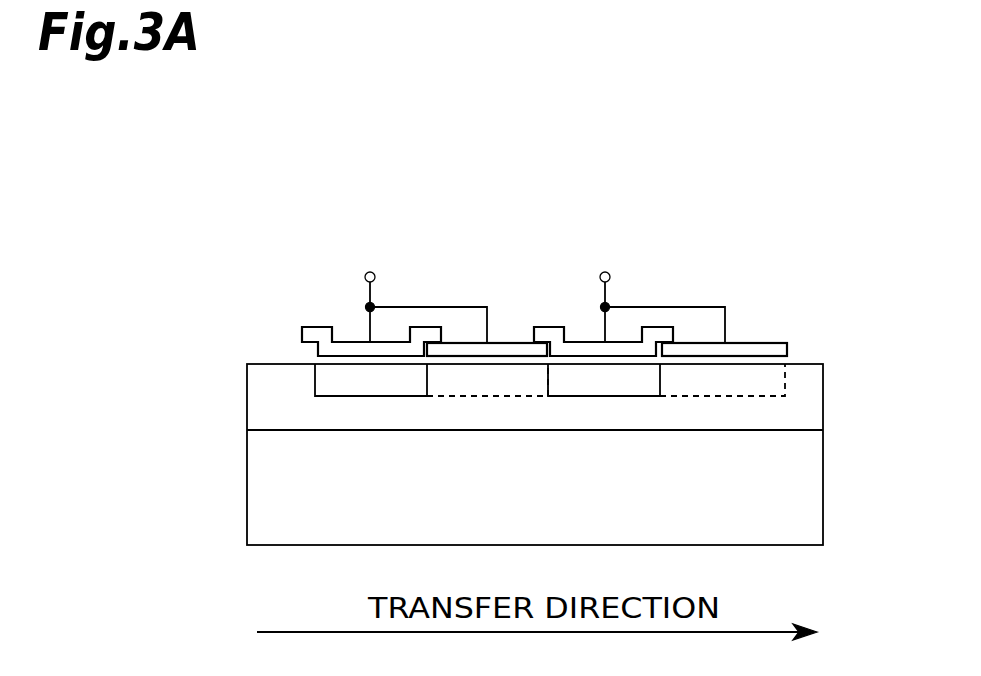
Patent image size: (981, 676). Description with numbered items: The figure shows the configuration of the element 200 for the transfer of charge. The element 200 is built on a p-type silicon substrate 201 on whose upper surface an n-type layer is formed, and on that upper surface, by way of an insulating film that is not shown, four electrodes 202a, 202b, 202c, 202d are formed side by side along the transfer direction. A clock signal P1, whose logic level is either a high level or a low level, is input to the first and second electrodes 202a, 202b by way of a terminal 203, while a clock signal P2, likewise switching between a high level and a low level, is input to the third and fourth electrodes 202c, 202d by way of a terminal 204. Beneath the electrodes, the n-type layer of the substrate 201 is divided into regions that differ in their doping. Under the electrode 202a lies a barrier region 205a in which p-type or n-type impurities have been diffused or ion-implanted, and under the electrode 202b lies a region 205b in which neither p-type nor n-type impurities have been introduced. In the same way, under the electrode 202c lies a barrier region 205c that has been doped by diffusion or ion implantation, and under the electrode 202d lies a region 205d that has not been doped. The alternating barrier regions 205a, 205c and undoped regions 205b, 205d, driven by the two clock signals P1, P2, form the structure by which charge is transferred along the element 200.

The element for the transfer of charge 200 is at (835, 283).
The p-type silicon substrate 201 is at (830, 363).
The electrode 202a is at (352, 340).
The electrode 202b is at (510, 340).
The electrode 202c is at (583, 340).
The electrode 202d is at (755, 340).
The terminal 203 is at (366, 275).
The terminal 204 is at (614, 275).
The barrier region 205a is at (337, 378).
The region 205b is at (463, 382).
The barrier region 205c is at (590, 382).
The region 205d is at (698, 388).
The clock signal P1 is at (368, 289).
The clock signal P2 is at (608, 290).